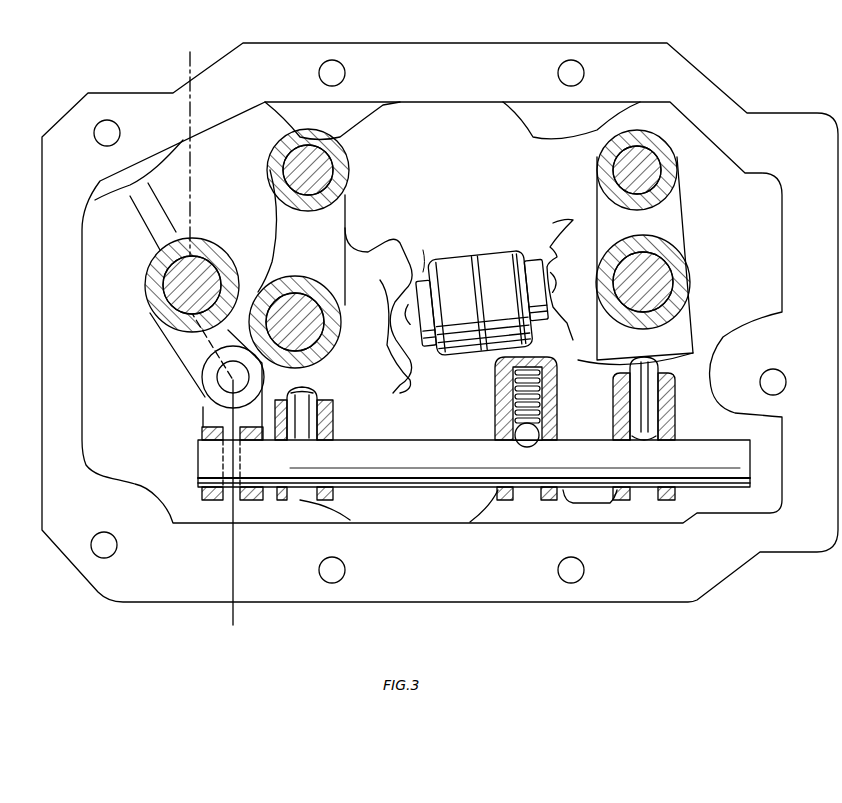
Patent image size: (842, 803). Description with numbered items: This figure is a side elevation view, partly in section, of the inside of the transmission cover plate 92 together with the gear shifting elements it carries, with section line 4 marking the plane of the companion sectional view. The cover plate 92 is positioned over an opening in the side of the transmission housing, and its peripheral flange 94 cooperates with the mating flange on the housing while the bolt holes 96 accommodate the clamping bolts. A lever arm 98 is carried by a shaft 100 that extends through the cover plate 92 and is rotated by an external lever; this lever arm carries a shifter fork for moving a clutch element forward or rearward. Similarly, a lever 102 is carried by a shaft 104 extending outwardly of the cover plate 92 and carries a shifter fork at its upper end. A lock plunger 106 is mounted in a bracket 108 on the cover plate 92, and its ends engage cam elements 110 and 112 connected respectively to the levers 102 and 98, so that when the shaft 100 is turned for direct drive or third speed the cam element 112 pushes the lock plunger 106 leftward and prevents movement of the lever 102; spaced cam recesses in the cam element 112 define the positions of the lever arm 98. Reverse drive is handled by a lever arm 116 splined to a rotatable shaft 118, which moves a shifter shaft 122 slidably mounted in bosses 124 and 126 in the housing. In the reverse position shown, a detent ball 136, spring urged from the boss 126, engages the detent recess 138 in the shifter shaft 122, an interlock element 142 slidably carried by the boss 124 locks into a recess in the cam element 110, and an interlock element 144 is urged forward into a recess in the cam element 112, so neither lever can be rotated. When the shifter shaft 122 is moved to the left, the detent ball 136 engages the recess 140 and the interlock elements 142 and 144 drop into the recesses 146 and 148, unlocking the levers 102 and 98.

The section line 4- 4 is at (200, 56).
The transmission cover plate 92 is at (765, 219).
The peripheral flange 94 is at (727, 100).
The bolt holes 96 is at (584, 73).
The lever arm 98 is at (675, 205).
The shaft 100 is at (690, 283).
The lever 102 is at (323, 238).
The shaft 104 is at (310, 317).
The lock plunger 106 is at (422, 268).
The bracket 108 is at (497, 267).
The cam element 110 is at (400, 353).
The cam element 112 is at (572, 248).
The lever arm 116 is at (197, 350).
The rotatable shaft 118 is at (195, 263).
The shifter shaft 122 is at (496, 466).
The boss 124 is at (334, 413).
The boss 126 is at (557, 375).
The detent ball 136 is at (543, 427).
The detent recess 138 is at (532, 446).
The recess 140 is at (590, 440).
The interlock element 142 is at (300, 391).
The interlock element 144 is at (648, 402).
The recess 146 is at (362, 440).
The recess 148 is at (695, 440).